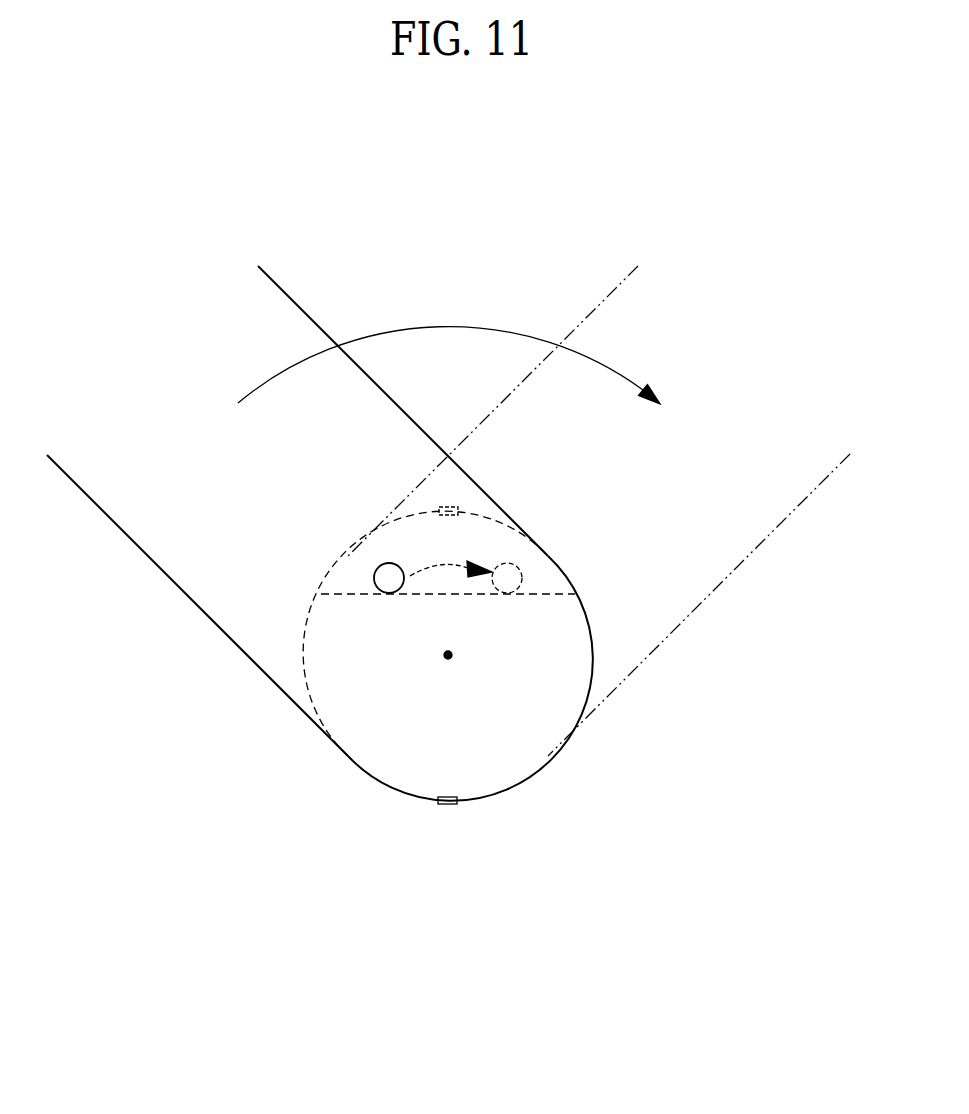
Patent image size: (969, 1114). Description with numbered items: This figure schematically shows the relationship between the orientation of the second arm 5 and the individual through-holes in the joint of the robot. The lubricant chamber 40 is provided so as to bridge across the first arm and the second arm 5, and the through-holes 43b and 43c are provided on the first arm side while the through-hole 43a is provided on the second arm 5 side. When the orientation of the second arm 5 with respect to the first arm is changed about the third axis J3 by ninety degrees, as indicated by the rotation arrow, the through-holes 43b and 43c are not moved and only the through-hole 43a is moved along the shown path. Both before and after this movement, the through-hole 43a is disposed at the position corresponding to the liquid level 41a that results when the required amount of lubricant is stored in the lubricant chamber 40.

The second arm 5 is at (285, 284).
The lubricant chamber 40 is at (590, 647).
The liquid level 41a is at (543, 594).
The through-hole 43a is at (375, 573).
The through-hole 43b is at (447, 805).
The through-hole 43c is at (447, 506).
The third axis J3 is at (449, 675).